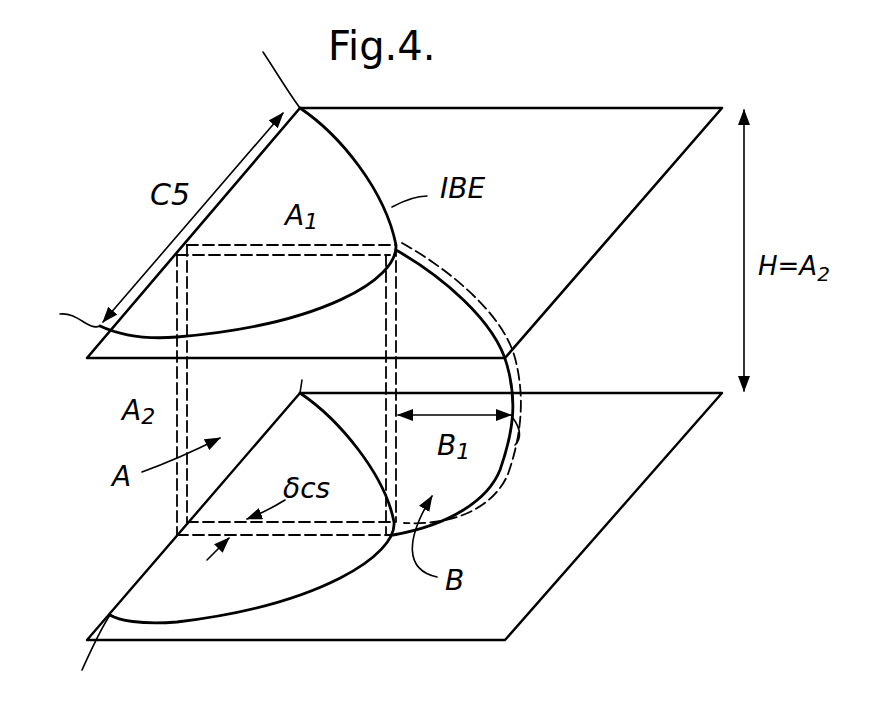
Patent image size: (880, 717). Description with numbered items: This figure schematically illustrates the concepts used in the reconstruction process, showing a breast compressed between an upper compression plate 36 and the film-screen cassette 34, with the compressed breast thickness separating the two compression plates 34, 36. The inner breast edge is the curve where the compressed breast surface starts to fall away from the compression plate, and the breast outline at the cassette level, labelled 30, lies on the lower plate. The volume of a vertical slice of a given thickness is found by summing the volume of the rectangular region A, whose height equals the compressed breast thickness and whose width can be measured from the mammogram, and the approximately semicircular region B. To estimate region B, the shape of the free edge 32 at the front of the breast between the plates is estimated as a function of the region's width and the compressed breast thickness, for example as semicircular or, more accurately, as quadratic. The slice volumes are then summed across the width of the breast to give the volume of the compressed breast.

The beam cross-section at workpiece plane 30 is at (175, 507).
The free edge 32 is at (478, 511).
The film-screen cassette 34 is at (404, 641).
The upper compression plate 36 is at (642, 124).